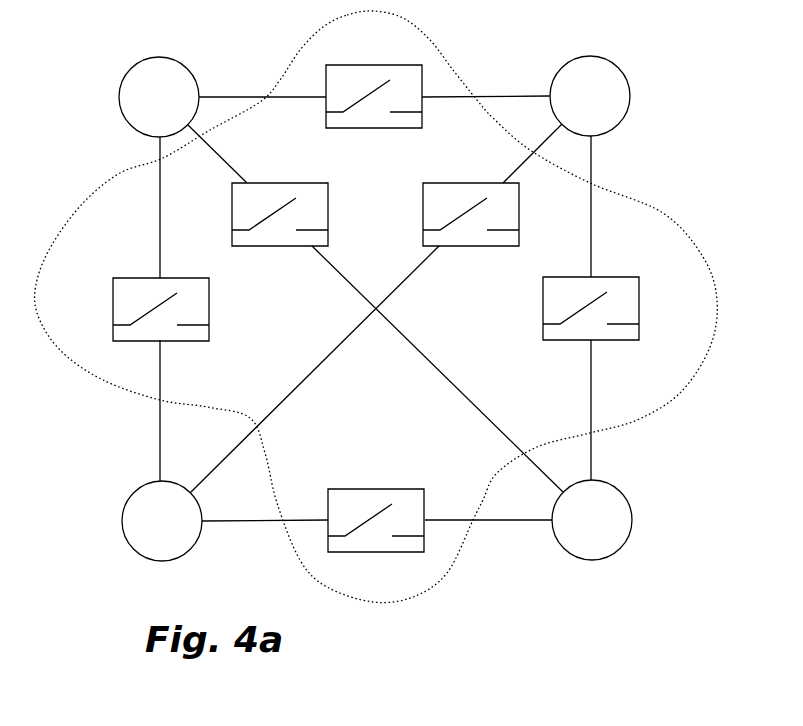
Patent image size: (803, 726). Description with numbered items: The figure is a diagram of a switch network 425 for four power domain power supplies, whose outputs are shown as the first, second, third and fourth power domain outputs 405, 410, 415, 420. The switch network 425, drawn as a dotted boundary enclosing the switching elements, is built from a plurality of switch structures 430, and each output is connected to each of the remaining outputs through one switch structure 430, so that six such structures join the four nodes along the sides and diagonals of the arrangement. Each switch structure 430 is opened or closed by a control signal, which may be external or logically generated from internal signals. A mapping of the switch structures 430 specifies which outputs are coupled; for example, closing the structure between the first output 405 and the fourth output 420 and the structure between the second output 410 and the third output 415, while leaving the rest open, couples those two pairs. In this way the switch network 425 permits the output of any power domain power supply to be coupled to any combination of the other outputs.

The PDXO 1 output 405 is at (163, 57).
The PDXO 2 output 410 is at (589, 56).
The PDXO 3 output 415 is at (155, 481).
The PDXO 4 output 420 is at (556, 503).
The switch network 425 is at (304, 64).
The switch structure 430 is at (372, 65).